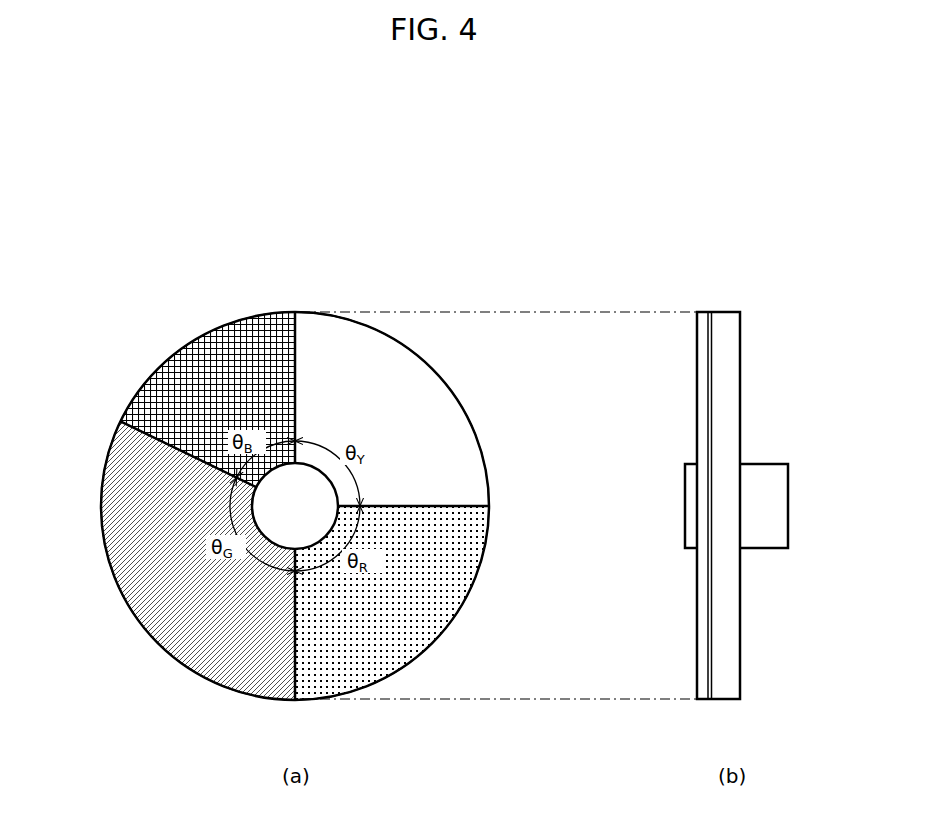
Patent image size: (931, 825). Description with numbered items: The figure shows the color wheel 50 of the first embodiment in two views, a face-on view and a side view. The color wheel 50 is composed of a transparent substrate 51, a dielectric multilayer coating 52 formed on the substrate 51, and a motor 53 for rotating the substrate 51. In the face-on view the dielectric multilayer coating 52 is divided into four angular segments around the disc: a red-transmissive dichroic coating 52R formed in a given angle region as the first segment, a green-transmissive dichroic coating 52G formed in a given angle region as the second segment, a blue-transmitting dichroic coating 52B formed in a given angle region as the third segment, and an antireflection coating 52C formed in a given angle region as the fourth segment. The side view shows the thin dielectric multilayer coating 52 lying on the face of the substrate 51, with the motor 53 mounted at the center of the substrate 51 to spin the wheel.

The color wheel 50 is at (345, 192).
The transparent substrate 51 is at (723, 330).
The dielectric multilayer coating 52 is at (704, 330).
The blue-transmitting dichroic coating 52B is at (190, 378).
The antireflection coating 52C is at (360, 370).
The green-transmissive dichroic coating 52G is at (188, 630).
The red-transmissive dichroic coating 52R is at (418, 612).
The motor 53 is at (758, 528).